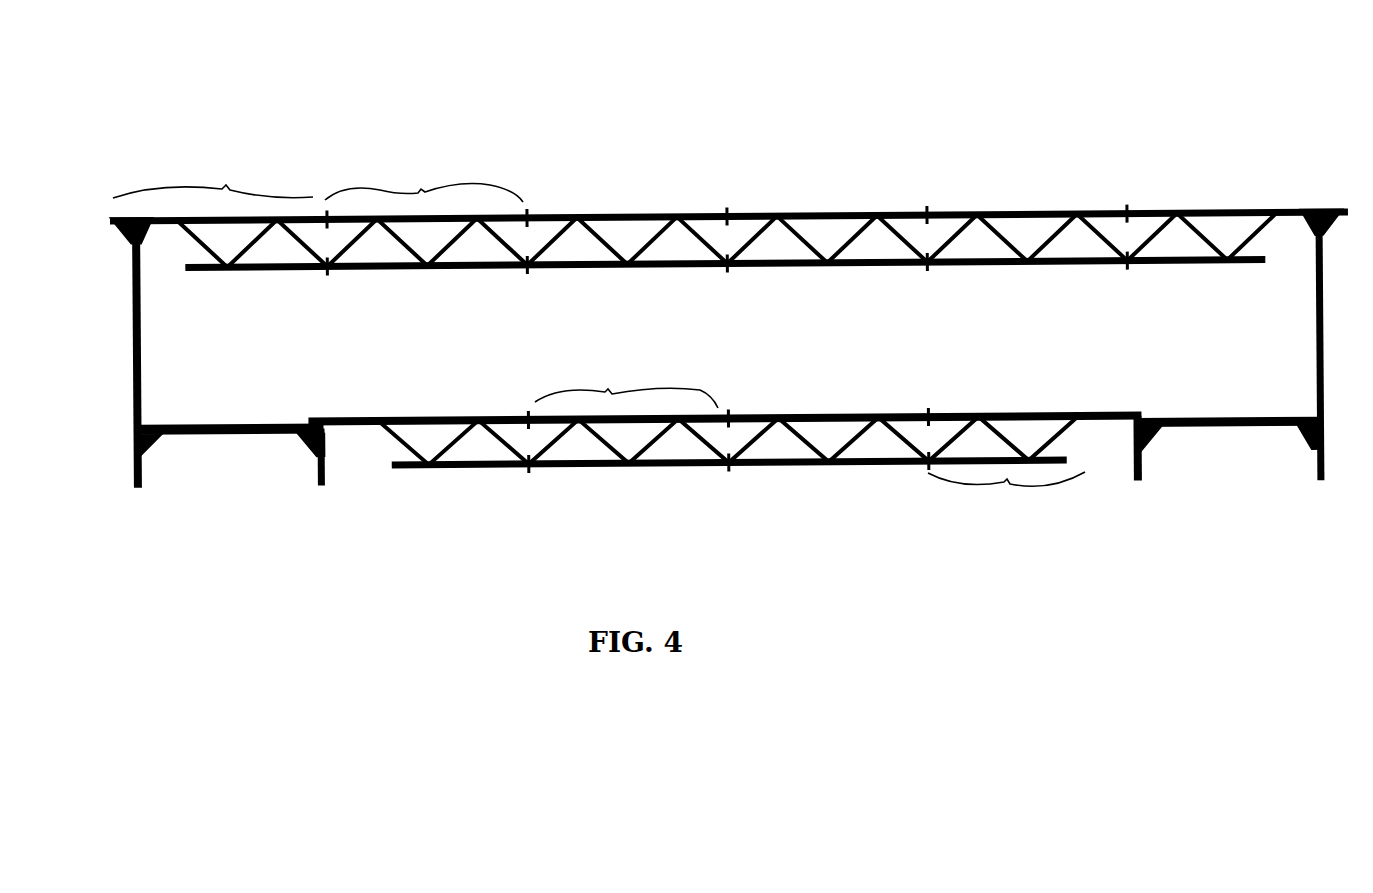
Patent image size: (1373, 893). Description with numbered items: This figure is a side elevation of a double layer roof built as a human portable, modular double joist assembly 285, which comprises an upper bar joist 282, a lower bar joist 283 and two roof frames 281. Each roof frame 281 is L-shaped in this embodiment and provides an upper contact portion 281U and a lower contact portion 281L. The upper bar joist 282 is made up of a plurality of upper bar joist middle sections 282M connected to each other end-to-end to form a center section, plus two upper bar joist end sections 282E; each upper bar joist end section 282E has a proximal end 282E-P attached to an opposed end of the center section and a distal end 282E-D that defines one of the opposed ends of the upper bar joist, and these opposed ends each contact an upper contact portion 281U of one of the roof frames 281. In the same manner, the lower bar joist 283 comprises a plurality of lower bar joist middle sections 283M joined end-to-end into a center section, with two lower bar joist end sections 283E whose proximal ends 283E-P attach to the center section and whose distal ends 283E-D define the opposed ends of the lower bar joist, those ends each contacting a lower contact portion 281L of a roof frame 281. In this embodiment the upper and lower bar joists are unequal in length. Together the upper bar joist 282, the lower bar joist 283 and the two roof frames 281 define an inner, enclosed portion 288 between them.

The modular double joist assembly 285 is at (612, 55).
The roof frame 281 is at (123, 458).
The upper contact portion 281U is at (1296, 222).
The lower contact portion 281L is at (1157, 413).
The upper bar joist 282 is at (935, 177).
The upper bar joist end section 282E is at (273, 190).
The upper bar joist middle section 282M is at (1030, 203).
The proximal end of upper bar joist end section 282E-P is at (1123, 208).
The distal end of upper bar joist end section 282E-D is at (1338, 208).
The inner enclosed portion 288 is at (382, 345).
The lower bar joist 283 is at (587, 478).
The lower bar joist end section 283E is at (438, 480).
The lower bar joist middle section 283M is at (807, 405).
The proximal end of lower bar joist end section 283E-P is at (933, 412).
The distal end of lower bar joist end section 283E-D is at (1138, 408).